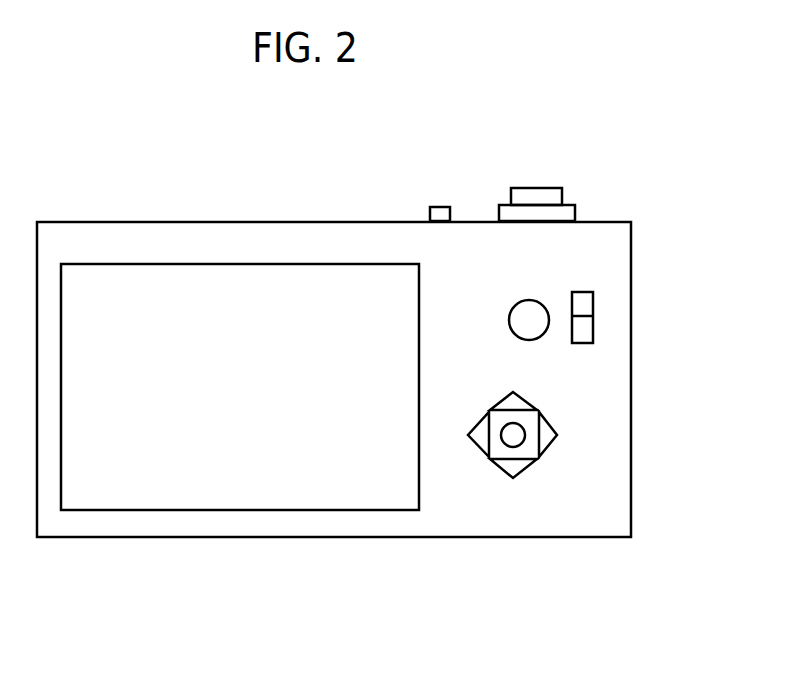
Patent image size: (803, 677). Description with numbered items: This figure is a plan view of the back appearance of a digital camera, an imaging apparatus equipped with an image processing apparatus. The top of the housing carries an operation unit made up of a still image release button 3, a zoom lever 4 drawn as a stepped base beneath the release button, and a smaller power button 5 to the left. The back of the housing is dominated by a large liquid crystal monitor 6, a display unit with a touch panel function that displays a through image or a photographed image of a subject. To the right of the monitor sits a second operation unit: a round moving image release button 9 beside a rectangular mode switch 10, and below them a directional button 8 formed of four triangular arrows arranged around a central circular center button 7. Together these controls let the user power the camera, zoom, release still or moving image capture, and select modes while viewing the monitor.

The still image release button 3 is at (552, 195).
The zoom lever 4 is at (565, 217).
The power button 5 is at (432, 207).
The liquid crystal monitor 6 is at (193, 465).
The center button 7 is at (515, 433).
The directional button 8 is at (579, 444).
The moving image release button 9 is at (528, 320).
The mode switch 10 is at (575, 318).